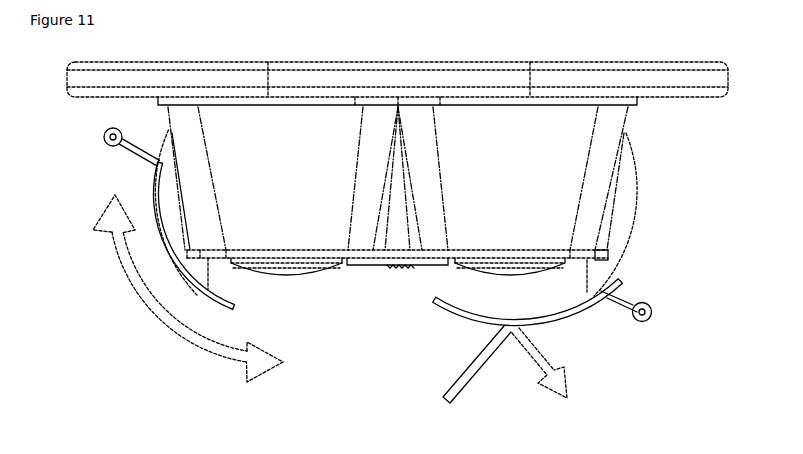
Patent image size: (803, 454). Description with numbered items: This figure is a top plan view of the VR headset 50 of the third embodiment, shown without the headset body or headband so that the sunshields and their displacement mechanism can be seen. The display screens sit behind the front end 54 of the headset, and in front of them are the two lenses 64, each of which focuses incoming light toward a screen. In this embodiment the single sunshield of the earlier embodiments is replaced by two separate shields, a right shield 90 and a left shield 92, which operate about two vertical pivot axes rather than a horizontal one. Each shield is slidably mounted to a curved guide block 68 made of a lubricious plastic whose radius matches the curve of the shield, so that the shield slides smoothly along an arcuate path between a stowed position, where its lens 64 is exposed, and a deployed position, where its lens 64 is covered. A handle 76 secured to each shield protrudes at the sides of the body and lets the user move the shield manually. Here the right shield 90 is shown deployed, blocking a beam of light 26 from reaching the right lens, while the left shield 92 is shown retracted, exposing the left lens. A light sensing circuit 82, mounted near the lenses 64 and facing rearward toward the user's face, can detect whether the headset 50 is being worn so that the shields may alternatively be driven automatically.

The front end 54 is at (332, 66).
The VR headset 50 is at (724, 207).
The light sensing circuit 82 is at (367, 268).
The lenses 64 is at (302, 268).
The guide block 68 is at (172, 222).
The left shield 92 is at (158, 197).
The right shield 90 is at (445, 305).
The handle 76 is at (104, 141).
The beam of light 26 is at (465, 391).